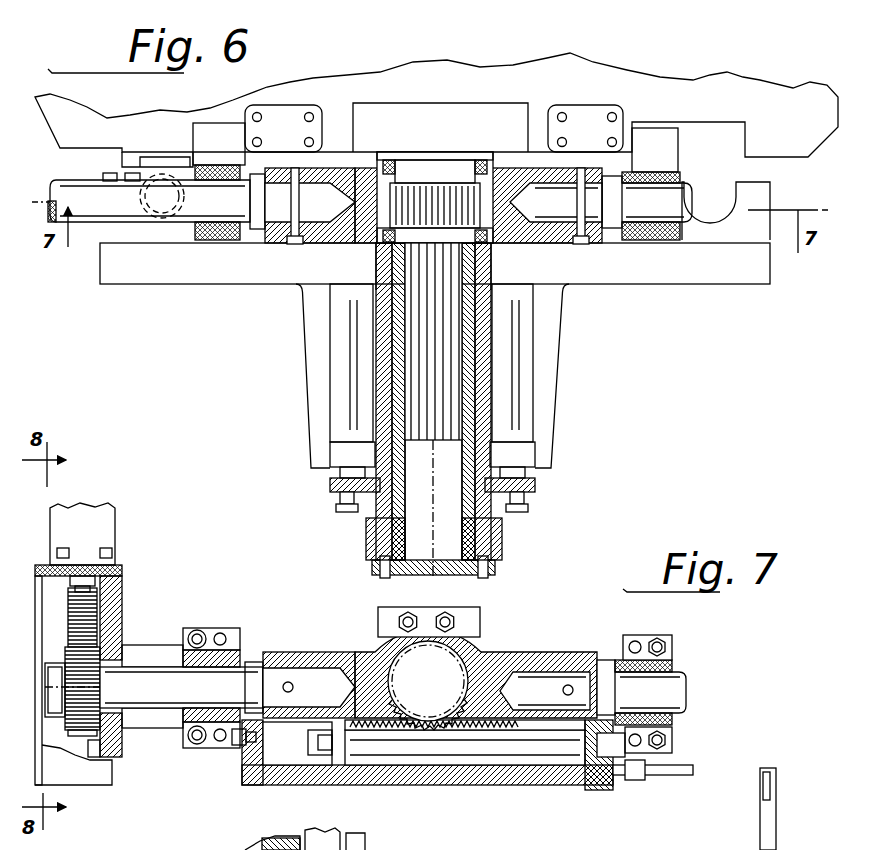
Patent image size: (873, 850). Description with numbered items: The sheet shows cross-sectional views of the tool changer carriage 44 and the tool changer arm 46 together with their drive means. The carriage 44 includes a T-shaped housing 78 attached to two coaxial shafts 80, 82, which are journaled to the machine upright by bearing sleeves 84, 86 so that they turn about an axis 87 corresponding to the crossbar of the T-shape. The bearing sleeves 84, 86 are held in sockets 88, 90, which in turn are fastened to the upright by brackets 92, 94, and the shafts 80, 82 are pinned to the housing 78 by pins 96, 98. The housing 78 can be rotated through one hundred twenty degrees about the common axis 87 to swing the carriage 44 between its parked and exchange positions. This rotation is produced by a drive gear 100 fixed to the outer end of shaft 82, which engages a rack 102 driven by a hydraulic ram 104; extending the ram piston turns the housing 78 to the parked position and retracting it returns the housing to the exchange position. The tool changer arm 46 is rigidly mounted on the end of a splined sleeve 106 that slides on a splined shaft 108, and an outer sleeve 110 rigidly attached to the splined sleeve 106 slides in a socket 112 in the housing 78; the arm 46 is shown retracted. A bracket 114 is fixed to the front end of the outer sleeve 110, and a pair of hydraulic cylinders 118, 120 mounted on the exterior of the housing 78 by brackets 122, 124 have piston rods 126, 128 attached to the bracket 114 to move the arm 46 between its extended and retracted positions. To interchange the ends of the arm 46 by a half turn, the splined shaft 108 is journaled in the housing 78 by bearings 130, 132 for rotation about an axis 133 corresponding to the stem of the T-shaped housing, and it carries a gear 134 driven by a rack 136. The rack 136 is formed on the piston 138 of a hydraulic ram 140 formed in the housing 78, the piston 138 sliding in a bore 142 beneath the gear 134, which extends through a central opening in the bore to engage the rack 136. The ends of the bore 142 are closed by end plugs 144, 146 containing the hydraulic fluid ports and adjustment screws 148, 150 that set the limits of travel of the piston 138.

In FIG. 6, the tool changer carriage 44 is at (284, 303).
In FIG. 7, the tool changer carriage 44 is at (603, 645).
In FIG. 6, the tool changer arm 46 is at (498, 530).
In FIG. 6, the T-shaped housing 78 is at (499, 182).
In FIG. 6, the shaft 80 is at (532, 240).
In FIG. 7, the shaft 80 is at (532, 686).
In FIG. 6, the shaft 82 is at (282, 243).
In FIG. 7, the shaft 82 is at (320, 670).
In FIG. 6, the bearing sleeve 84 is at (640, 241).
In FIG. 7, the bearing sleeve 84 is at (685, 672).
In FIG. 6, the bearing sleeve 86 is at (192, 226).
In FIG. 7, the bearing sleeve 86 is at (200, 712).
In FIG. 6, the axis 87 is at (89, 202).
In FIG. 6, the socket 88 is at (668, 241).
In FIG. 7, the socket 88 is at (672, 663).
In FIG. 6, the socket 90 is at (205, 240).
In FIG. 7, the socket 90 is at (235, 652).
In FIG. 6, the bracket 92 is at (662, 163).
In FIG. 7, the bracket 92 is at (673, 650).
In FIG. 6, the bracket 94 is at (222, 156).
In FIG. 6, the pin 96 is at (582, 243).
In FIG. 7, the pin 96 is at (569, 684).
In FIG. 6, the pin 98 is at (297, 244).
In FIG. 7, the pin 98 is at (288, 681).
In FIG. 7, the drive gear 100 is at (92, 683).
In FIG. 7, the rack 102 is at (95, 600).
In FIG. 7, the hydraulic ram 104 is at (85, 527).
In FIG. 6, the splined sleeve 106 is at (455, 506).
In FIG. 6, the splined shaft 108 is at (443, 440).
In FIG. 6, the outer sleeve 110 is at (472, 410).
In FIG. 6, the socket 112 is at (472, 377).
In FIG. 6, the bracket 114 is at (338, 499).
In FIG. 6, the hydraulic cylinder 118 is at (517, 378).
In FIG. 6, the hydraulic cylinder 120 is at (345, 343).
In FIG. 6, the bracket 122 is at (530, 488).
In FIG. 6, the bracket 124 is at (333, 480).
In FIG. 6, the piston rod 126 is at (520, 489).
In FIG. 6, the piston rod 128 is at (343, 492).
In FIG. 6, the bearing 130 is at (378, 248).
In FIG. 6, the bearing 132 is at (414, 167).
In FIG. 6, the axis 133 is at (433, 550).
In FIG. 6, the gear 134 is at (441, 183).
In FIG. 7, the gear 134 is at (447, 694).
In FIG. 7, the rack 136 is at (492, 732).
In FIG. 7, the piston 138 is at (500, 754).
In FIG. 7, the hydraulic ram 140 is at (396, 791).
In FIG. 7, the bore 142 is at (283, 748).
In FIG. 7, the end plug 144 is at (590, 729).
In FIG. 7, the end plug 146 is at (242, 769).
In FIG. 7, the adjustment screw 148 is at (665, 752).
In FIG. 7, the adjustment screw 150 is at (224, 738).